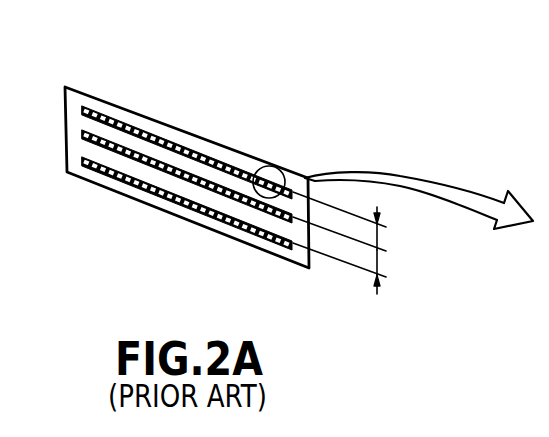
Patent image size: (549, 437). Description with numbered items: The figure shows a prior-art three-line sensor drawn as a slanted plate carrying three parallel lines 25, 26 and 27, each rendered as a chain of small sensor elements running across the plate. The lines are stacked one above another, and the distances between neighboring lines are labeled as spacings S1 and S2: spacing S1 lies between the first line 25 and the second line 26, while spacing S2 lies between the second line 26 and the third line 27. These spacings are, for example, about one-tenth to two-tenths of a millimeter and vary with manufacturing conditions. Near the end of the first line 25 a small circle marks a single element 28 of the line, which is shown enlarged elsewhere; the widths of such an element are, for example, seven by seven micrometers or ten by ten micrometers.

The line 25 is at (100, 110).
The line 26 is at (162, 152).
The line 27 is at (168, 196).
The single element 28 is at (302, 181).
The spacing S1 is at (379, 238).
The spacing S2 is at (379, 262).